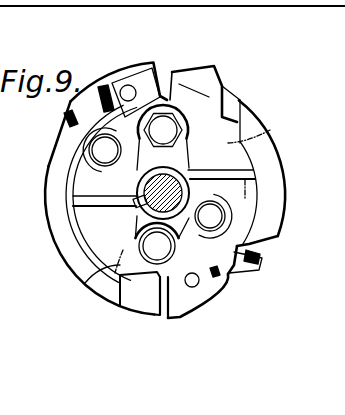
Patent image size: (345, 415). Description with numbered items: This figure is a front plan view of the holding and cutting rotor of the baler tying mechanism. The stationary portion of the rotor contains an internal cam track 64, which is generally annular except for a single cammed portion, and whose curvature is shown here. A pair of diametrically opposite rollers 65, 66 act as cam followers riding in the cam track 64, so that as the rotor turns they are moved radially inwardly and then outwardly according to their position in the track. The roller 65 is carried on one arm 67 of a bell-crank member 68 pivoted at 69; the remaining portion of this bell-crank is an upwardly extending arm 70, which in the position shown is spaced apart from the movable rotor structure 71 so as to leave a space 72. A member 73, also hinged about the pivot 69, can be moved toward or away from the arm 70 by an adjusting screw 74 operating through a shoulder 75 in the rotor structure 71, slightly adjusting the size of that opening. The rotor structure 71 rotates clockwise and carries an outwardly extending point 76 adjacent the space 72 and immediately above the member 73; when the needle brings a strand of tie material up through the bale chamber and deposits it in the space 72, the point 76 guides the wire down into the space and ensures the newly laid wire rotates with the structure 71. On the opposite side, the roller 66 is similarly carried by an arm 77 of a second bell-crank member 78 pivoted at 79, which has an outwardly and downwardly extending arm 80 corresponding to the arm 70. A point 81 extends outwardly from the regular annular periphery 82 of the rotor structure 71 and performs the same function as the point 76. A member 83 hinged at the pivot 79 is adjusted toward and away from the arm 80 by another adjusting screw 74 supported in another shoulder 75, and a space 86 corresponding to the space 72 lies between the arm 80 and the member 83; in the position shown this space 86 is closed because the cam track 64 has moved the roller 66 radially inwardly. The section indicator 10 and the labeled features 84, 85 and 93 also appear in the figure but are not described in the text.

The section line 10 is at (165, 47).
The internal cam track 64 is at (268, 139).
The roller 65 is at (80, 156).
The roller 66 is at (226, 215).
The arm 67 is at (71, 103).
The bell-crank member 68 is at (226, 92).
The pivot 69 is at (182, 141).
The upwardly extending arm 70 is at (179, 68).
The movable rotor structure 71 is at (129, 67).
The space 72 is at (192, 114).
The member 73 is at (118, 98).
The adjusting screw 74 is at (62, 118).
The shoulder 75 is at (86, 98).
The outwardly extending point 76 is at (175, 76).
The arm 77 is at (268, 240).
The bell-crank member 78 is at (128, 262).
The pivot 79 is at (158, 246).
The outwardly and downwardly extending arm 80 is at (147, 305).
The point 81 is at (182, 312).
The regular annular periphery 82 is at (282, 172).
The member 83 is at (233, 299).
The magnet 84 is at (262, 262).
The lug face 85 is at (252, 279).
The space 86 is at (172, 320).
The notch 93 is at (232, 100).